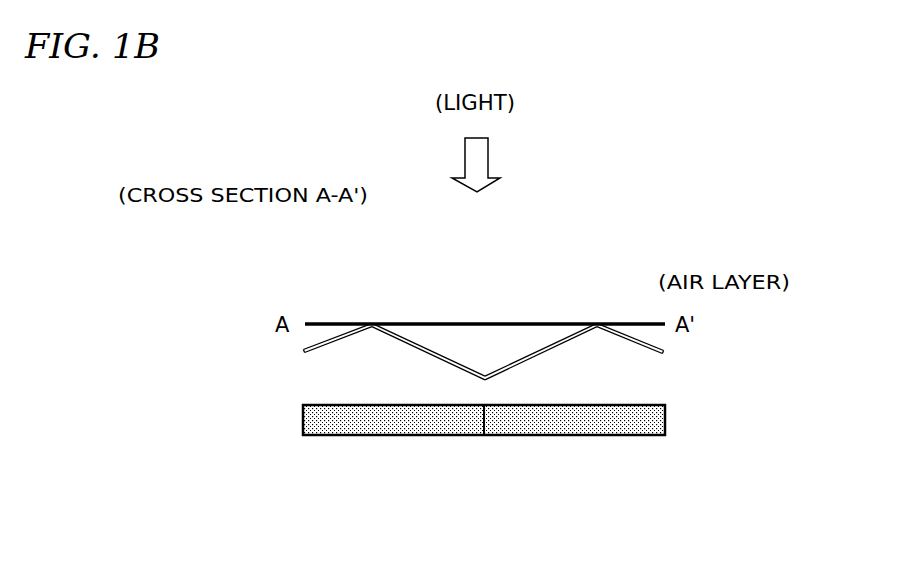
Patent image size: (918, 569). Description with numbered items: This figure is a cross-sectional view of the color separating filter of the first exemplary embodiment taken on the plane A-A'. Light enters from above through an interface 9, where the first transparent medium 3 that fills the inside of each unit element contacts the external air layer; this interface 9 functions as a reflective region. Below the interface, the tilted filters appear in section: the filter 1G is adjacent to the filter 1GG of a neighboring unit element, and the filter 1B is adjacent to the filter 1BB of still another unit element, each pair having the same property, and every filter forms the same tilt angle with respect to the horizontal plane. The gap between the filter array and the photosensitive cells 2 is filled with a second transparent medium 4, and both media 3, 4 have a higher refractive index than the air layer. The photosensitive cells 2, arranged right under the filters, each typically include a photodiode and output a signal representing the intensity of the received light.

The filter 1GG is at (288, 346).
The filter 1G is at (443, 350).
The filter 1B is at (530, 350).
The filter 1BB is at (665, 352).
The interface 9 is at (407, 322).
The first transparent medium 3 is at (467, 352).
The second transparent medium 4 is at (600, 355).
The photosensitive cells 2 is at (423, 435).